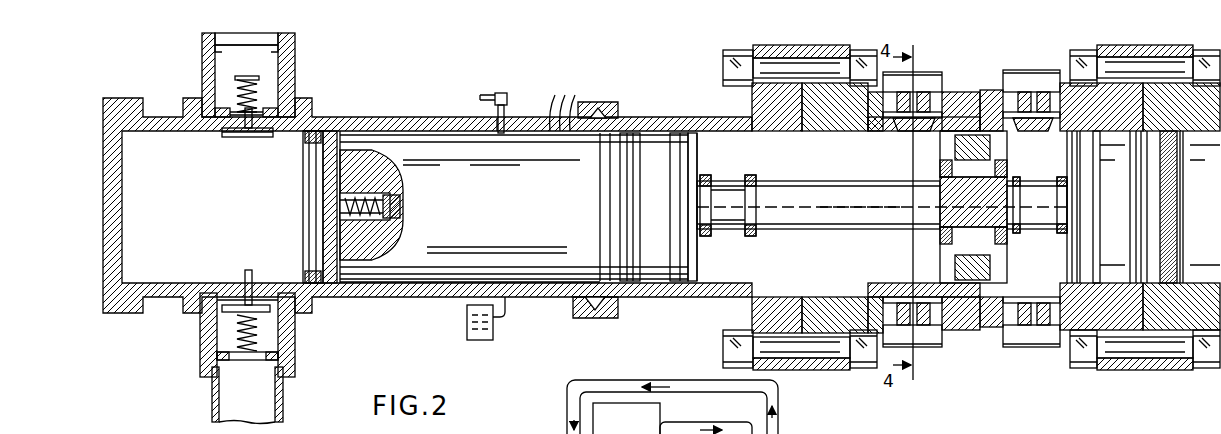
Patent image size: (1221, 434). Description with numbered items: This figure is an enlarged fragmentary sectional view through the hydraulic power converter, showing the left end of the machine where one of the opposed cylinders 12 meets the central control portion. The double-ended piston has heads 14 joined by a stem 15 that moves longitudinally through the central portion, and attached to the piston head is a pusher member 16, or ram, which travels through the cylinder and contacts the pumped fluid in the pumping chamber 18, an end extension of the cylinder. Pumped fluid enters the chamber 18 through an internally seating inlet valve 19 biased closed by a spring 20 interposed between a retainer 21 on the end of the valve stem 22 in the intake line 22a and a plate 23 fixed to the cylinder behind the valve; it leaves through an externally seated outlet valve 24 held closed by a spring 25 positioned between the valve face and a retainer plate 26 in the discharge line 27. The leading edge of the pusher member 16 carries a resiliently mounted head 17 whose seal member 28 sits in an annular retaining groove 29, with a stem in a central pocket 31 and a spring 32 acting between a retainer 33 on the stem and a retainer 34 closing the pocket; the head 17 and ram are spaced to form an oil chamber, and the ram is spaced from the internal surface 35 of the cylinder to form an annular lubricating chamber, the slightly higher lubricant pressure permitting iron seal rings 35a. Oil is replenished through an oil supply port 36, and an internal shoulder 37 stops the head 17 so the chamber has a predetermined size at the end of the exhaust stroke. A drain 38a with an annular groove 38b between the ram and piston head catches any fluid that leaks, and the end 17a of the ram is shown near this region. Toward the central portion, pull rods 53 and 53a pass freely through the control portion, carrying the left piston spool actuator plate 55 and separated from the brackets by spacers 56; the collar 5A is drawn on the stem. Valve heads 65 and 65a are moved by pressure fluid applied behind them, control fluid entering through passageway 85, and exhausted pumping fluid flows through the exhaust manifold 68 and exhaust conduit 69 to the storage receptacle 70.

The cylinder 12 is at (652, 283).
The piston head 14 is at (1168, 190).
The stem 15 is at (785, 198).
The pusher member 16 is at (470, 241).
The head 17 is at (318, 203).
The cylinder end 17a is at (690, 162).
The pumping chamber 18 is at (167, 273).
The inlet valve 19 is at (236, 137).
The spring 20 is at (237, 92).
The retainer 21 is at (240, 78).
The valve stem 22 is at (262, 88).
The intake line 22a is at (203, 70).
The plate 23 is at (257, 110).
The outlet valve 24 is at (228, 312).
The spring 25 is at (237, 337).
The retainer plate 26 is at (243, 362).
The discharge line 27 is at (297, 352).
The seal member 28 is at (310, 277).
The annular retaining groove 29 is at (313, 163).
The central pocket 31 is at (370, 206).
The spring 32 is at (372, 217).
The retainer 33 is at (388, 208).
The retainer 34 is at (340, 185).
The internal surface 35 is at (428, 280).
The iron seal rings 35a is at (557, 101).
The oil supply port 36 is at (503, 128).
The internal shoulder 37 is at (497, 136).
The drain 38a is at (598, 318).
The annular groove 38b is at (582, 132).
The collar 5A is at (755, 236).
The pull rods 53 is at (820, 195).
The pull rods 53a is at (860, 212).
The left piston spool actuator plate 55 is at (1007, 245).
The spacers 56 is at (730, 236).
The valve head 65 is at (1000, 168).
The valve head 65a is at (940, 160).
The exhaust manifold 68 is at (942, 75).
The exhaust conduit 69 is at (778, 405).
The storage receptacle 70 is at (660, 418).
The passageway 85 is at (970, 108).